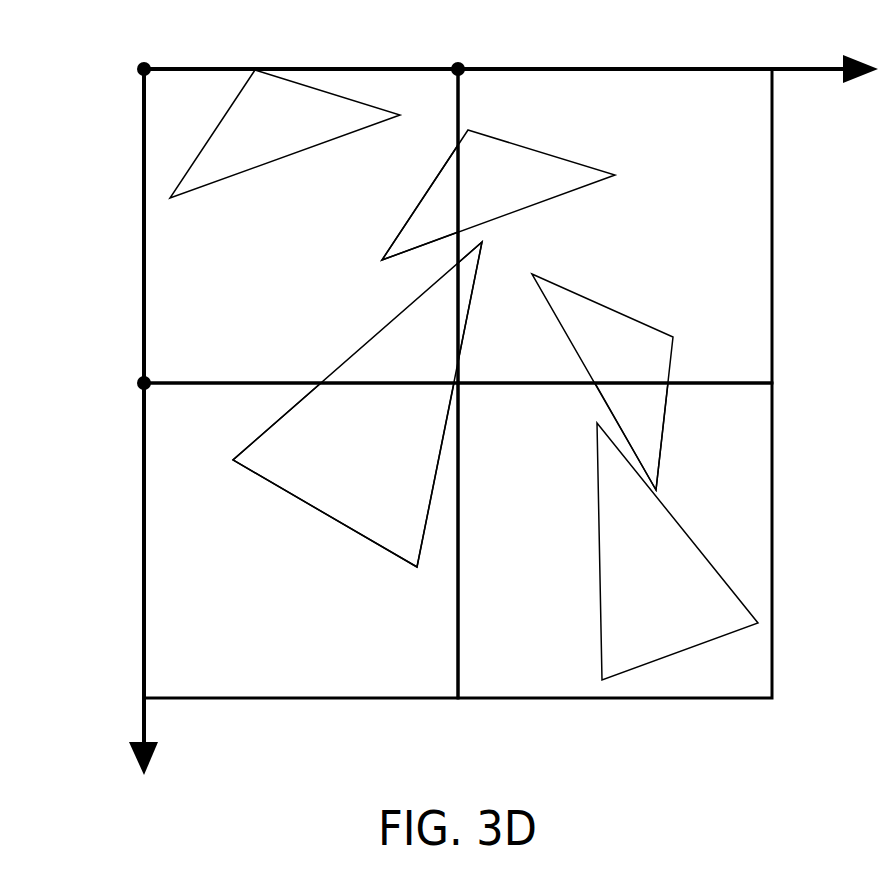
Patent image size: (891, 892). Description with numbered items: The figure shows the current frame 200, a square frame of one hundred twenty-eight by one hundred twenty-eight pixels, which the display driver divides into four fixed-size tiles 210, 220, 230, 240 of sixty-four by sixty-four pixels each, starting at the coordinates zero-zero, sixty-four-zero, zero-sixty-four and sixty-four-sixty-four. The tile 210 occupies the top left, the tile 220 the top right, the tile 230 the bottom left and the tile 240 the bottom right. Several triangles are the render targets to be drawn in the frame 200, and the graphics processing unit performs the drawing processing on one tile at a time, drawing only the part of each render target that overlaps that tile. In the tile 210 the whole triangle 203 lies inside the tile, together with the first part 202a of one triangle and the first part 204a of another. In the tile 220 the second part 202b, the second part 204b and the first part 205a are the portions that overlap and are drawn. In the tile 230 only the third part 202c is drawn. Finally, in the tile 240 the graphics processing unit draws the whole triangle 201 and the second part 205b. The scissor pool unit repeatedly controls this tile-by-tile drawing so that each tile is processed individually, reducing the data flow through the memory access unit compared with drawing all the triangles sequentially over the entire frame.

The current frame 200 is at (144, 128).
The triangle 201 is at (675, 598).
The first part of the triangle 202a is at (437, 373).
The second part of the triangle 202b is at (468, 262).
The third part of the triangle 202c is at (395, 467).
The triangle 203 is at (300, 136).
The first part of the triangle 204a is at (437, 222).
The second part of the triangle 204b is at (538, 194).
The first part of the triangle 205a is at (658, 366).
The second part of the triangle 205b is at (645, 421).
The tile 210 is at (186, 308).
The tile 220 is at (732, 152).
The tile 230 is at (186, 601).
The tile 240 is at (730, 463).